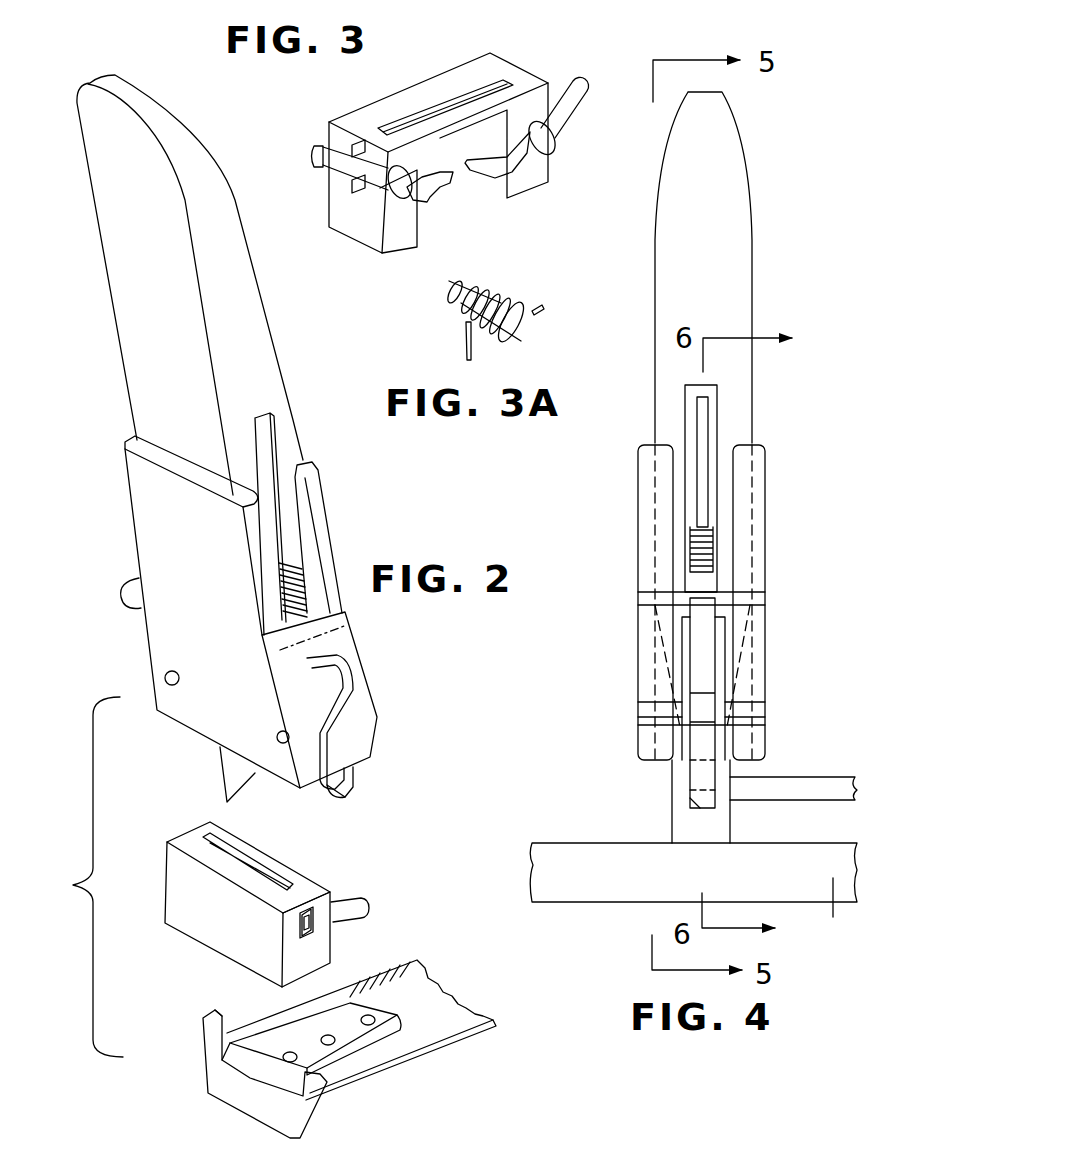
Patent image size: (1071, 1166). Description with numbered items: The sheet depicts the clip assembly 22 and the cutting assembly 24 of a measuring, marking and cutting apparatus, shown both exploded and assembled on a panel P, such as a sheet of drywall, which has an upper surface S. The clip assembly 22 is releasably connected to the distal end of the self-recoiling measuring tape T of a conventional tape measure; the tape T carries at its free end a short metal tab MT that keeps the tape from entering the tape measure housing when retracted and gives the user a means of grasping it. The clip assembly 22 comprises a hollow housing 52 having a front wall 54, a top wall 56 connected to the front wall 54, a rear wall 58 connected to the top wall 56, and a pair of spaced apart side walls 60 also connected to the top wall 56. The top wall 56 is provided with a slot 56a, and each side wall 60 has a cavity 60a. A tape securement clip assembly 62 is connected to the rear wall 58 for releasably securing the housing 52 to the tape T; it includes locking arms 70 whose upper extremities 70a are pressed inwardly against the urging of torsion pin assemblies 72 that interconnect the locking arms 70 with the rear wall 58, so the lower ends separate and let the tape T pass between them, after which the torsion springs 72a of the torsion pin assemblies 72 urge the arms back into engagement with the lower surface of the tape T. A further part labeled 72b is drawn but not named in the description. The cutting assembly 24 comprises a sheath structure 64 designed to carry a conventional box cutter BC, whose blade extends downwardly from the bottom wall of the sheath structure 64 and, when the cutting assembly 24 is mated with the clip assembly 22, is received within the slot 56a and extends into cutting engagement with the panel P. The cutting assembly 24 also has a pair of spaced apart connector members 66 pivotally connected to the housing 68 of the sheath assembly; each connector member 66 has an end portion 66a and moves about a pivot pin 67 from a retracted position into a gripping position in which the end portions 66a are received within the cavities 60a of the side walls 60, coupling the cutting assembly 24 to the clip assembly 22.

In FIG. 2, the clip assembly 22 is at (266, 898).
In FIG. 3, the clip assembly 22 is at (438, 169).
In FIG. 4, the clip assembly 22 is at (702, 821).
In FIG. 2, the cutting assembly 24 is at (350, 509).
In FIG. 4, the cutting assembly 24 is at (770, 405).
In FIG. 2, the hollow housing 52 is at (250, 898).
In FIG. 3, the hollow housing 52 is at (441, 169).
In FIG. 2, the front wall 54 is at (243, 948).
In FIG. 3, the front wall 54 is at (347, 110).
In FIG. 4, the front wall 54 is at (668, 818).
In FIG. 2, the top wall 56 is at (190, 837).
In FIG. 3, the top wall 56 is at (473, 77).
In FIG. 2, the slot 56a is at (223, 852).
In FIG. 3, the slot 56a is at (420, 117).
In FIG. 2, the rear wall 58 is at (272, 855).
In FIG. 3, the rear wall 58 is at (387, 220).
In FIG. 2, the side walls 60 is at (310, 945).
In FIG. 3, the side walls 60 is at (345, 215).
In FIG. 4, the side walls 60 is at (698, 823).
In FIG. 2, the cavity 60a is at (307, 920).
In FIG. 3, the cavity 60a is at (356, 186).
In FIG. 4, the cavity 60a is at (702, 803).
In FIG. 3, the tape securement clip assembly 62 is at (457, 150).
In FIG. 2, the sheath structure 64 is at (158, 505).
In FIG. 4, the sheath structure 64 is at (760, 490).
In FIG. 2, the connector members 66 is at (132, 594).
In FIG. 4, the connector members 66 is at (703, 637).
In FIG. 2, the end portion 66a is at (353, 786).
In FIG. 4, the end portion 66a is at (705, 740).
In FIG. 2, the pivot pin 67 is at (277, 727).
In FIG. 2, the housing 68 is at (343, 638).
In FIG. 4, the housing 68 is at (767, 670).
In FIG. 2, the locking arms 70 is at (367, 907).
In FIG. 3, the locking arms 70 is at (427, 200).
In FIG. 3, the upper extremities 70a is at (580, 90).
In FIG. 3, the torsion pin assemblies 72 is at (387, 195).
In FIG. 3A, the torsion pin assemblies 72 is at (458, 305).
In FIG. 3A, the torsion springs 72a is at (540, 317).
In FIG. 3, the spring hooks 72b is at (482, 170).
In FIG. 2, the box cutter BC is at (158, 393).
In FIG. 4, the box cutter BC is at (733, 257).
In FIG. 2, the metal tab MT is at (238, 1105).
In FIG. 2, the measuring tape T is at (367, 1063).
In FIG. 4, the measuring tape T is at (808, 782).
In FIG. 4, the upper surface S is at (580, 842).
In FIG. 4, the panel P is at (832, 914).